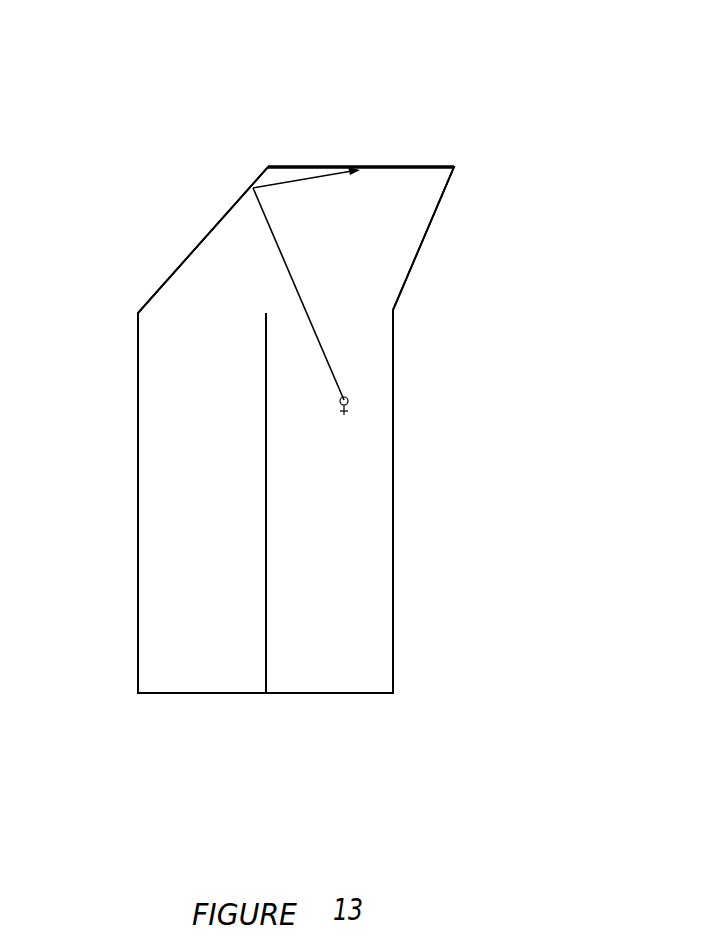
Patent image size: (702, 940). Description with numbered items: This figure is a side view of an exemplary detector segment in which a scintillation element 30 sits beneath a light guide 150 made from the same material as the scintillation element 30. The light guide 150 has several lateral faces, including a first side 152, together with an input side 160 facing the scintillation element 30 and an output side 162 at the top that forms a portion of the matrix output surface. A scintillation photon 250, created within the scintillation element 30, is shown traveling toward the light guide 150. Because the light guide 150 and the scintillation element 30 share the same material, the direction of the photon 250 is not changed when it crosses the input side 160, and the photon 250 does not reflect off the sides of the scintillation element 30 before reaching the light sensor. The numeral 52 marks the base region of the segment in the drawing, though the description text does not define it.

The scintillation element 30 is at (362, 492).
The base 52 is at (427, 694).
The light guide 150 is at (445, 222).
The first side 152 is at (218, 223).
The input side 160 is at (132, 312).
The output side 162 is at (322, 166).
The scintillation photon 250 is at (349, 397).